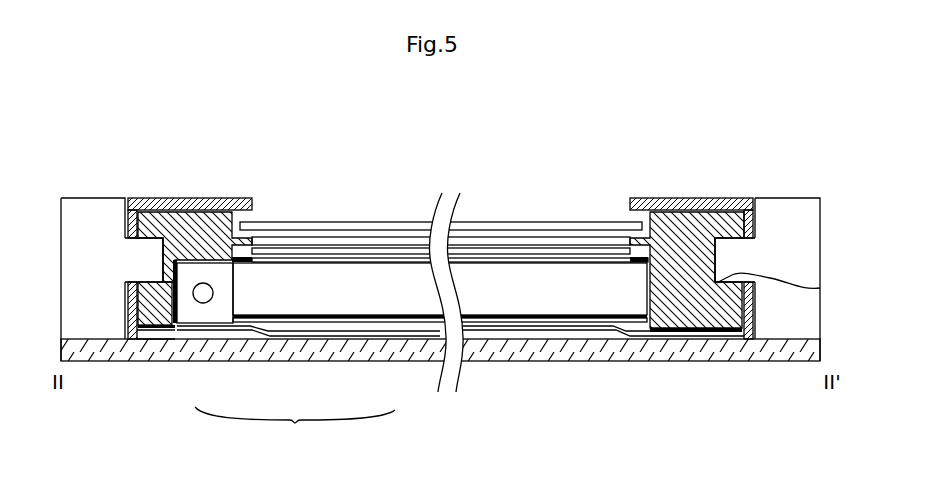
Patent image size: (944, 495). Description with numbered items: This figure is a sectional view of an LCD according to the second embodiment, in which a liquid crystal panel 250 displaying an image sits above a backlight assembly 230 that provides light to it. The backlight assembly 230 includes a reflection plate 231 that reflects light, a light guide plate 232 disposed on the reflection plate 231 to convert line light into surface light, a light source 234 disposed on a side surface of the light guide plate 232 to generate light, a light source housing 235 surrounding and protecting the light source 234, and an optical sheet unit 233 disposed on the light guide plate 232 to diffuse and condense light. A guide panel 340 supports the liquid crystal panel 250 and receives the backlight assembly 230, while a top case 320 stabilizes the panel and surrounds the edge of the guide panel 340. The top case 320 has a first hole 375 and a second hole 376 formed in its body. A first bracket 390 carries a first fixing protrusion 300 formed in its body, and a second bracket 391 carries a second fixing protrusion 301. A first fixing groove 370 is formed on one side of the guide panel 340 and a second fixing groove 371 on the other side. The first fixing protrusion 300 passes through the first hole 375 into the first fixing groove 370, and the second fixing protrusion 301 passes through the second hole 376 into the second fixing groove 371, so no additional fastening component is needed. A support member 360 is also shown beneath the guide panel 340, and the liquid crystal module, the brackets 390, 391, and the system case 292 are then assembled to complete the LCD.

The backlight assembly 230 is at (295, 428).
The reflection plate 231 is at (388, 322).
The light guide plate 232 is at (352, 297).
The optical sheet unit 233 is at (302, 255).
The light source 234 is at (203, 303).
The light source housing 235 is at (238, 323).
The liquid crystal panel 250 is at (551, 211).
The system case 292 is at (783, 348).
The first fixing protrusion 300 is at (736, 253).
The second fixing protrusion 301 is at (143, 258).
The top case 320 is at (232, 208).
The guide panel 340 is at (193, 218).
The support member 360 is at (692, 333).
The first fixing groove 370 is at (820, 288).
The second fixing groove 371 is at (157, 327).
The first hole 375 is at (752, 247).
The second hole 376 is at (128, 247).
The first bracket 390 is at (803, 213).
The second bracket 391 is at (78, 268).